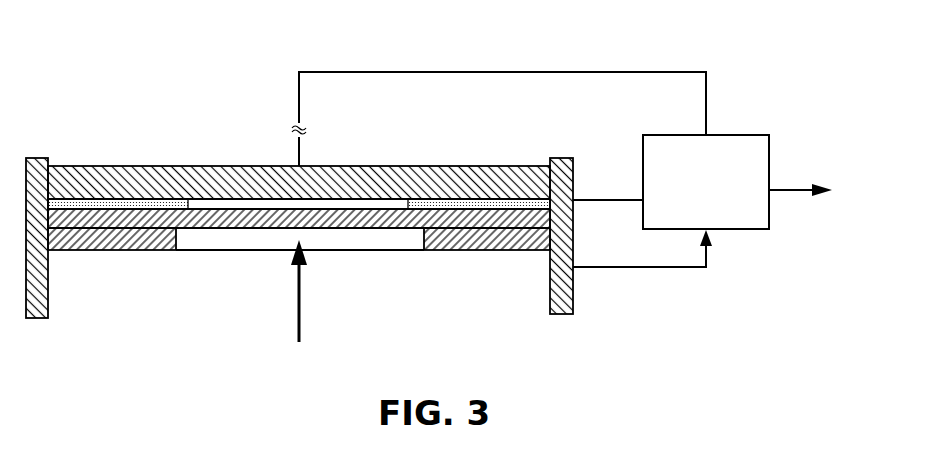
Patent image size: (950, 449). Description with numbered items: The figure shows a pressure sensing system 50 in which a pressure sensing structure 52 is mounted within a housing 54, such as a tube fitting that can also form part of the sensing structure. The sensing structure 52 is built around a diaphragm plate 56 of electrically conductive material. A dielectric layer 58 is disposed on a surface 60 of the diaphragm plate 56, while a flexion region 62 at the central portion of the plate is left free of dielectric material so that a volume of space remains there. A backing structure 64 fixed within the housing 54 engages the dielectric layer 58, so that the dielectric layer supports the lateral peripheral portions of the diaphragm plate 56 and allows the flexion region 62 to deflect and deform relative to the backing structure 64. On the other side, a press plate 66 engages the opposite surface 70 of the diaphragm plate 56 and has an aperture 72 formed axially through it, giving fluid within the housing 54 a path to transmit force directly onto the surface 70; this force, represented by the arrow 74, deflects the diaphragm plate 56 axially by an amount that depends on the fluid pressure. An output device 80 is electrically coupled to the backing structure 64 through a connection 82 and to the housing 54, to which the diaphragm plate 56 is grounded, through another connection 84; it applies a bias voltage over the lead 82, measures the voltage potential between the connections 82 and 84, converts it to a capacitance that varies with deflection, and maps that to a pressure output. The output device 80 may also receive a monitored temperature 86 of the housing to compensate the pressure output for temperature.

The pressure sensing system 50 is at (99, 58).
The pressure sensing structure 52 is at (100, 120).
The housing 54 is at (573, 300).
The diaphragm plate 56 is at (543, 226).
The dielectric layer 58 is at (543, 203).
The surface 60 is at (337, 210).
The flexion region 62 is at (213, 198).
The backing structure 64 is at (448, 166).
The press plate 66 is at (452, 250).
The opposite surface 70 is at (333, 215).
The aperture 72 is at (176, 250).
The force 74 is at (301, 315).
The output device 80 is at (746, 135).
The connection 82 is at (502, 72).
The connection 84 is at (620, 200).
The temperature input 86 is at (651, 267).